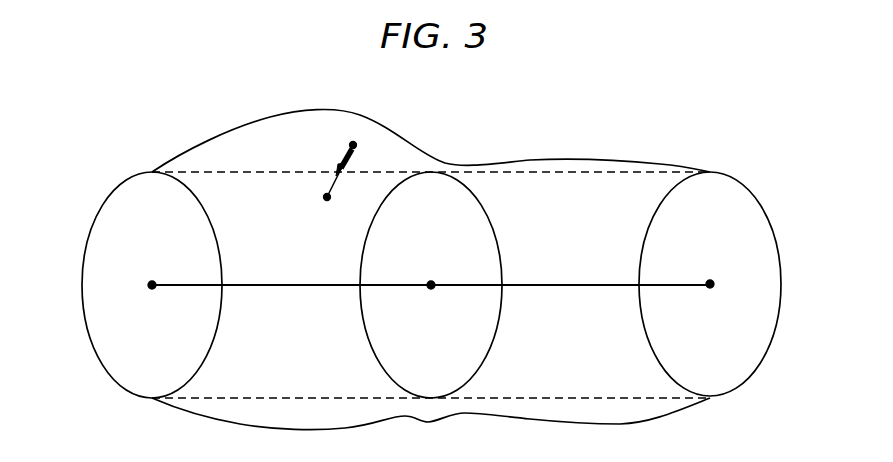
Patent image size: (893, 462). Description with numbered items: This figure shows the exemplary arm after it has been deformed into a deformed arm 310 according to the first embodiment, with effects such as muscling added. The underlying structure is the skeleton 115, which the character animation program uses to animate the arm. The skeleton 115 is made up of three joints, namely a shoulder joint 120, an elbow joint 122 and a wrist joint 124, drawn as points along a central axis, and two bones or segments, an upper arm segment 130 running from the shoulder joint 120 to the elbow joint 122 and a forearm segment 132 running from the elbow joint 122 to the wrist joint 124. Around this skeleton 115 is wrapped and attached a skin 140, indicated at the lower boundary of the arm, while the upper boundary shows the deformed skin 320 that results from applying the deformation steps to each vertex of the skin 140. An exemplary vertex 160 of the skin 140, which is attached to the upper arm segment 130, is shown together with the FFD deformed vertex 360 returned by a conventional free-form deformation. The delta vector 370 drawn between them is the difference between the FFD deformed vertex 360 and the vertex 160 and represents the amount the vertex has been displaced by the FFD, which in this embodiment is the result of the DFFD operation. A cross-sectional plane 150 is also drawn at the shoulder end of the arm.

The deformed arm 310 is at (412, 253).
The deformed skin 320 is at (209, 141).
The skin 140 is at (270, 397).
The cross-sectional plane / ellipse 150 is at (120, 210).
The upper arm segment 130 is at (270, 284).
The forearm segment 132 is at (565, 284).
The shoulder joint 120 is at (152, 289).
The elbow joint 122 is at (431, 289).
The wrist joint 124 is at (709, 288).
The vertex 160 is at (326, 174).
The FFD deformed vertex 360 is at (353, 143).
The delta vector 370 is at (337, 175).
The skeleton 115 is at (536, 325).